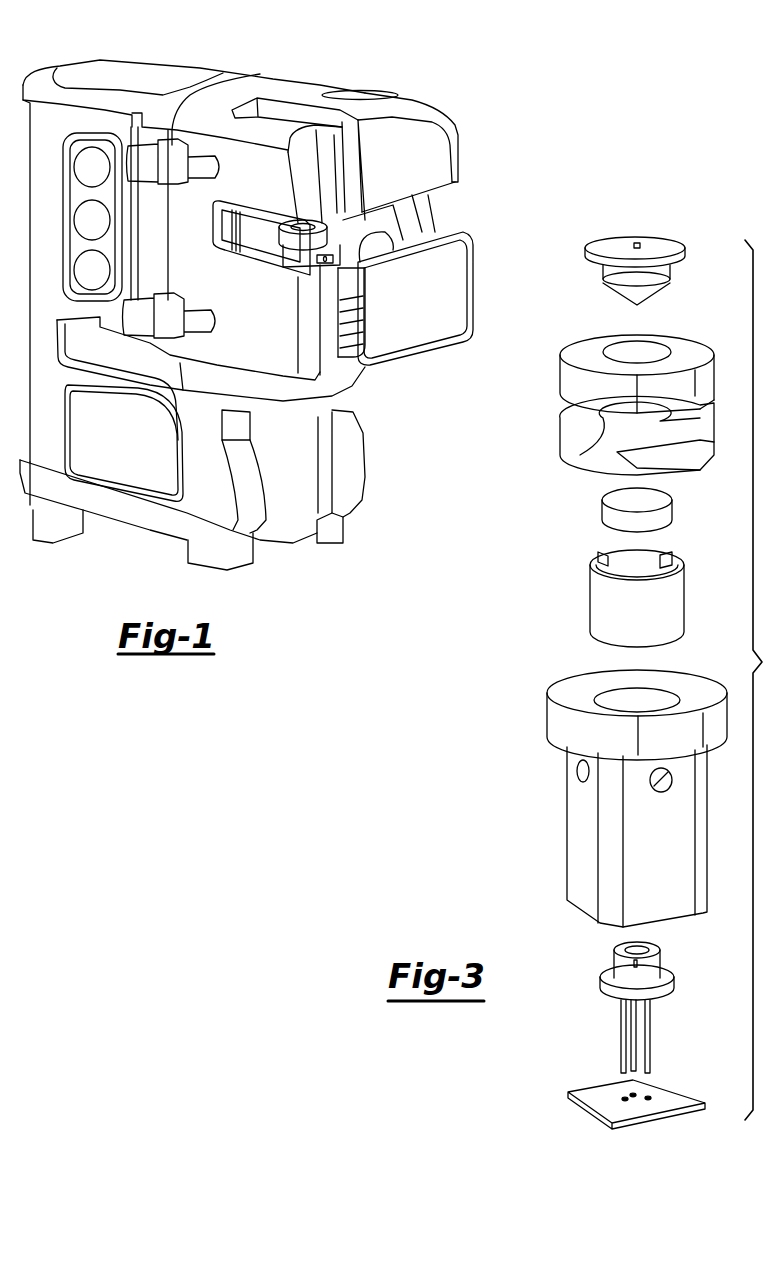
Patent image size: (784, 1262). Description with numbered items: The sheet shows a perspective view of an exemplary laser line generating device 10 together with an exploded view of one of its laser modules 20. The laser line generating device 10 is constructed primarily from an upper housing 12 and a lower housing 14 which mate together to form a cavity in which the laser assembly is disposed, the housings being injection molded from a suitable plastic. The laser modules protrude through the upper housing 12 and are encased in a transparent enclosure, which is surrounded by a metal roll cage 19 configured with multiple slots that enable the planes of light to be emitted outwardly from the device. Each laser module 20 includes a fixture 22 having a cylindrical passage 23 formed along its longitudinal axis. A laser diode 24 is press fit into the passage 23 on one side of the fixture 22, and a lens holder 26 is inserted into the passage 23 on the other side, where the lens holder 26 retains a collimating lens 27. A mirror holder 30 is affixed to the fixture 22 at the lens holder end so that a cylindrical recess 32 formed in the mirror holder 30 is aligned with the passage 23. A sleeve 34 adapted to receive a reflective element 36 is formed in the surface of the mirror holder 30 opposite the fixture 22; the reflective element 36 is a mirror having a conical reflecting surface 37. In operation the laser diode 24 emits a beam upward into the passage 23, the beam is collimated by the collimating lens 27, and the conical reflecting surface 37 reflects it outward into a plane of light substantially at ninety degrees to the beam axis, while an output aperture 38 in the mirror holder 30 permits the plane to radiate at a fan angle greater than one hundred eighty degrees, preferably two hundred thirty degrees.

In FIG. 1, the laser line generating device 10 is at (270, 295).
In FIG. 1, the upper housing 12 is at (82, 64).
In FIG. 1, the lower housing 14 is at (370, 465).
In FIG. 1, the metal roll cage 19 is at (460, 162).
In FIG. 3, the laser module 20 is at (504, 574).
In FIG. 3, the fixture 22 is at (618, 787).
In FIG. 3, the cylindrical passage 23 is at (607, 693).
In FIG. 3, the laser diode 24 is at (600, 985).
In FIG. 3, the lens holder 26 is at (590, 585).
In FIG. 3, the collimating lens 27 is at (602, 508).
In FIG. 3, the mirror holder 30 is at (607, 352).
In FIG. 3, the cylindrical recess 32 is at (618, 425).
In FIG. 3, the sleeve 34 is at (660, 350).
In FIG. 3, the reflective element 36 is at (615, 245).
In FIG. 3, the conical reflecting surface 37 is at (617, 300).
In FIG. 3, the output aperture 38 is at (532, 421).